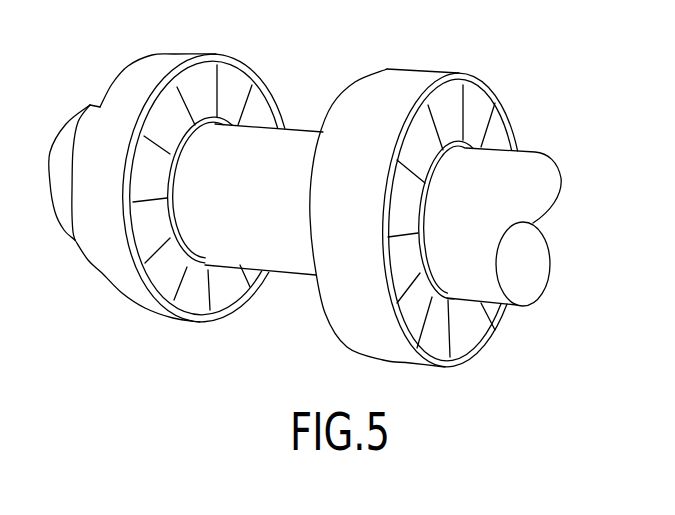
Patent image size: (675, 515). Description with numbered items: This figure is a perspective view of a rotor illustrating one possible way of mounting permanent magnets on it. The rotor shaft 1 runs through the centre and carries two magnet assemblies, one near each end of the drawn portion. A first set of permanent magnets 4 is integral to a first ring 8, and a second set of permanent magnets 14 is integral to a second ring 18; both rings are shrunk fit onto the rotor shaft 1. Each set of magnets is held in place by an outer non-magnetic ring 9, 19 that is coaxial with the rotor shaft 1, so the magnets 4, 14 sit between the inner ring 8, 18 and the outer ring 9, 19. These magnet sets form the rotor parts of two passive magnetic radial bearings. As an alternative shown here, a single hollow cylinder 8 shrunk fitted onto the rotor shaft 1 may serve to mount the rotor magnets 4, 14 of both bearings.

The rotor shaft 1 is at (258, 202).
The first set of permanent magnets 4 is at (488, 95).
The first ring 8 is at (422, 218).
The outer non-magnetic ring 9 is at (425, 77).
The second set of permanent magnets 14 is at (252, 73).
The second ring 18 is at (173, 225).
The outer non-magnetic ring 19 is at (182, 57).